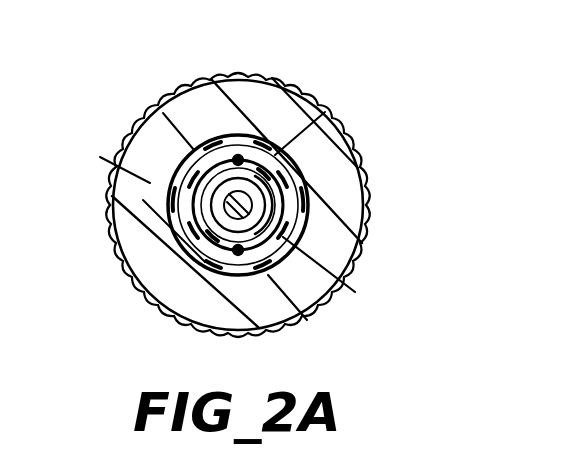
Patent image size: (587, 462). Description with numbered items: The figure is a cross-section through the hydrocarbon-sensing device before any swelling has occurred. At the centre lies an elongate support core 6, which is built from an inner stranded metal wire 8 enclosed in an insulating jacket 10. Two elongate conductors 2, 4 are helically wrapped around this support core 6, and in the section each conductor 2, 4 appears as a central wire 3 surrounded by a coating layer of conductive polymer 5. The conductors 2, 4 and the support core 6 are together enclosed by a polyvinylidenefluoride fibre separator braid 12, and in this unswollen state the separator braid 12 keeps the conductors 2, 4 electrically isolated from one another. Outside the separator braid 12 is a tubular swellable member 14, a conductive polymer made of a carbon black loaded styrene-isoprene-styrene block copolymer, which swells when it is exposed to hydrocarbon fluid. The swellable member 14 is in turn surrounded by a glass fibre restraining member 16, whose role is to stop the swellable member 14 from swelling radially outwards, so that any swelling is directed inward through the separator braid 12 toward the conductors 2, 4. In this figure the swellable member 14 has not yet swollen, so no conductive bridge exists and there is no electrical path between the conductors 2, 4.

The elongate conductor 2 is at (325, 112).
The central wire 3 is at (266, 166).
The elongate conductor 4 is at (155, 300).
The conductive polymer layer 5 is at (303, 254).
The support core 6 is at (137, 264).
The inner stranded metal wire 8 is at (230, 204).
The insulating jacket 10 is at (163, 113).
The separator braid 12 is at (213, 132).
The swellable member 14 is at (267, 115).
The restraining member 16 is at (327, 303).